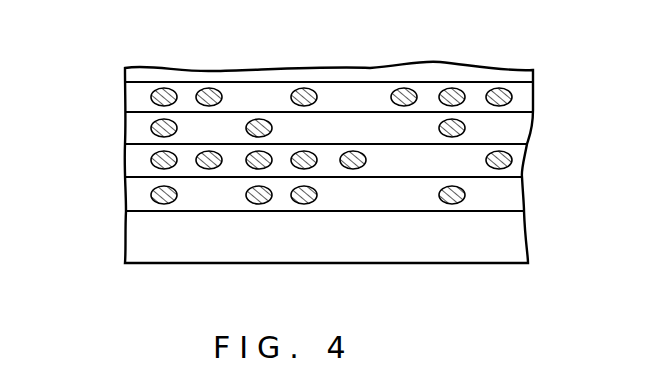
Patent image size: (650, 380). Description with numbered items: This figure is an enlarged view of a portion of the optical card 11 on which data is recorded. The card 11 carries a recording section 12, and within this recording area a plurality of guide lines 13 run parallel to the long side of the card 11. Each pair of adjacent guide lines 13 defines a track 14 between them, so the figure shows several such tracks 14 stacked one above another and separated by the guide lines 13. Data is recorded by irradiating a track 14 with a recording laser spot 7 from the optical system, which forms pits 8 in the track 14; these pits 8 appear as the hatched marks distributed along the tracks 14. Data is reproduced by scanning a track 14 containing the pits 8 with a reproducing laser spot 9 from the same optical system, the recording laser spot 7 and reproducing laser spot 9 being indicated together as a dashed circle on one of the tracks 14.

The optical card 11 is at (450, 63).
The recording section 12 is at (68, 55).
The guide lines 13 is at (534, 78).
The track 14 is at (114, 84).
The pits 8 is at (293, 198).
The recording laser spot 7 is at (398, 183).
The reproducing laser spot 9 is at (402, 160).